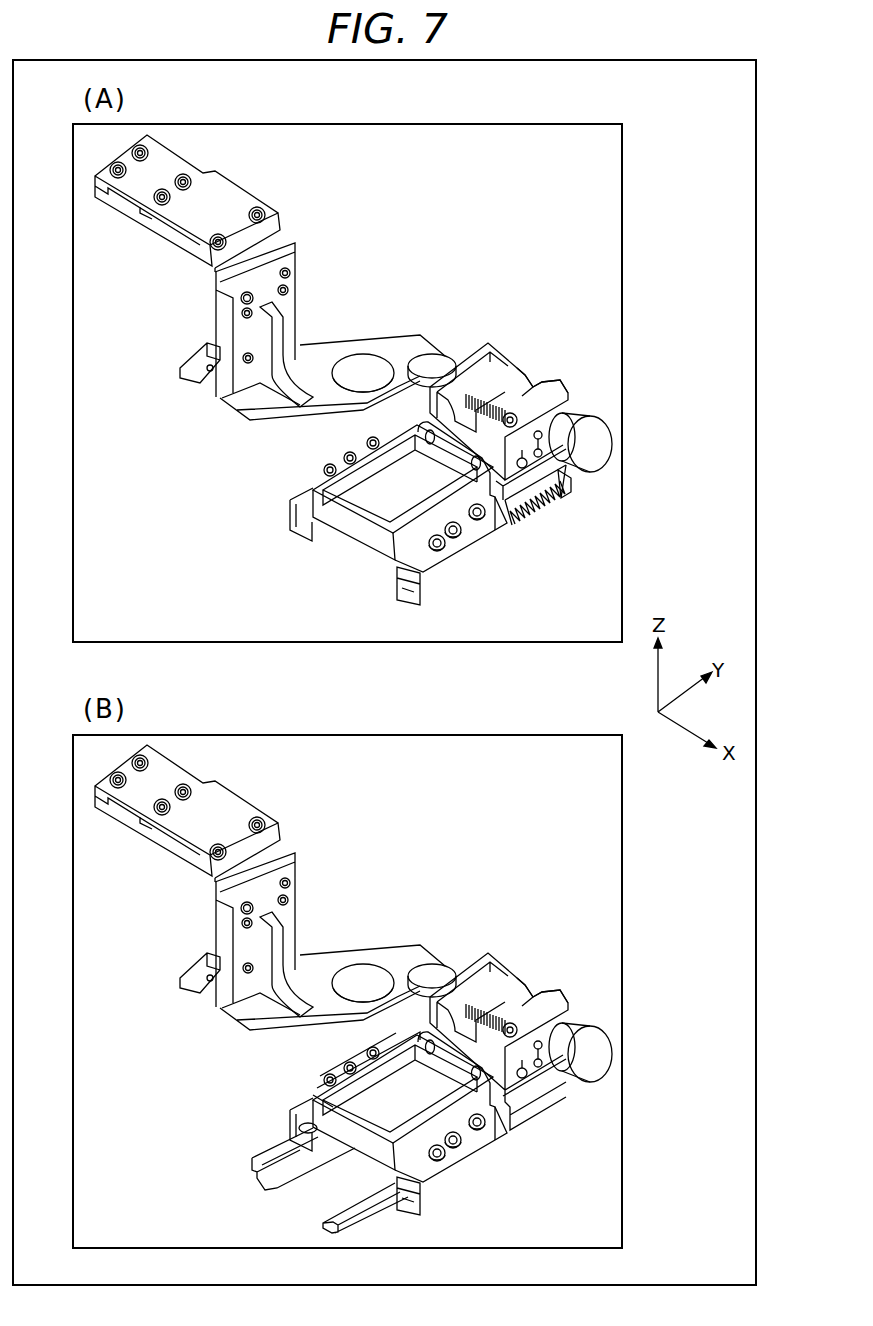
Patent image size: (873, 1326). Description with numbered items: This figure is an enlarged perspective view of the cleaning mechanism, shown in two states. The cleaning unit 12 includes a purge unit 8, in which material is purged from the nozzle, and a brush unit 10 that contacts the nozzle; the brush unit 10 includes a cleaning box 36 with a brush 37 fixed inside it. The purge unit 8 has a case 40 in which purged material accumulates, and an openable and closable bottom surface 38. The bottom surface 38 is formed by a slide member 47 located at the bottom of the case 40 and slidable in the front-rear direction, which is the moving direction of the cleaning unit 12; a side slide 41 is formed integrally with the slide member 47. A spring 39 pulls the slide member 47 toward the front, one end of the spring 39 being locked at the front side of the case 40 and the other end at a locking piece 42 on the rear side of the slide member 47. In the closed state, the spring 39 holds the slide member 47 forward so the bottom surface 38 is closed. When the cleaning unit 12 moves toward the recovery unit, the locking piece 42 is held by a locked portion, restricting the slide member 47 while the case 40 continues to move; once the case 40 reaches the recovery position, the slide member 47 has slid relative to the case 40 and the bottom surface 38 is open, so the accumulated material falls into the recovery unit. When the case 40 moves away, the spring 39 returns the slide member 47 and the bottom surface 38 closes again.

The purge unit 8 is at (348, 527).
The brush unit 10 is at (504, 345).
The cleaning unit 12 is at (389, 732).
The cleaning box 36 is at (557, 382).
The brush 37 is at (500, 392).
The bottom surface 38 is at (328, 1088).
The spring 39 is at (533, 510).
The case 40 is at (373, 537).
The side slide 41 is at (323, 1230).
The locking piece 42 is at (572, 480).
The slide member 47 is at (322, 1137).